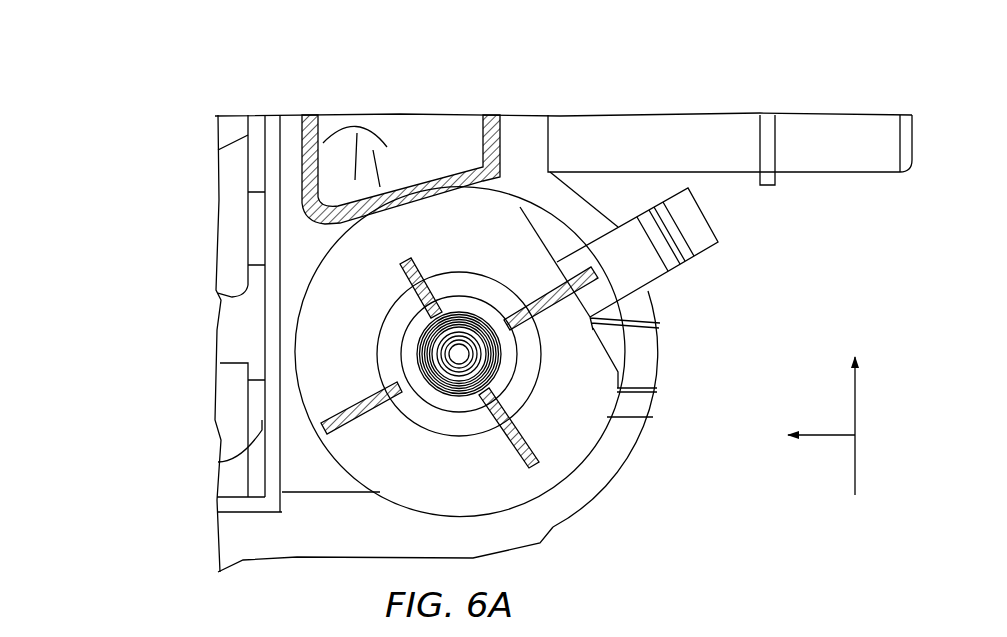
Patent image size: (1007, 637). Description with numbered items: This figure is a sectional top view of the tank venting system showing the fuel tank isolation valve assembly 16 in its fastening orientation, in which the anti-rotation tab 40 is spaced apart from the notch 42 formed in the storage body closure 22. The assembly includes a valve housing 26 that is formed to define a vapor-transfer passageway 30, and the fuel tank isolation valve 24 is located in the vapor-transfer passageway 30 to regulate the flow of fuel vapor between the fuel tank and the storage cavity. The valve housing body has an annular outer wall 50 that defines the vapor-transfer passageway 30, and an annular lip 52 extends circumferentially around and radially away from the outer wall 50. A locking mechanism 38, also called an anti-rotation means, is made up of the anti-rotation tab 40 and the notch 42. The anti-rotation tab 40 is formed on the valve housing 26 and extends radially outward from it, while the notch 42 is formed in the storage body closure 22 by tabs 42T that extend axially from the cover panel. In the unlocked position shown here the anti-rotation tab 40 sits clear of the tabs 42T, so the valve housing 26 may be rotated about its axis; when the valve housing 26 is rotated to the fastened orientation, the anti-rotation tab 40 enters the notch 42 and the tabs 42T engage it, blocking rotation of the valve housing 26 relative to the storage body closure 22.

The fuel tank isolation valve assembly 16 is at (282, 636).
The storage body closure 22 is at (297, 542).
The fuel tank isolation valve 24 is at (485, 296).
The valve housing 26 is at (305, 278).
The vapor-transfer passageway 30 is at (425, 348).
The locking mechanism 38 is at (852, 612).
The anti-rotation tab 40 is at (912, 260).
The notch 42 is at (778, 388).
The tabs 42T is at (617, 312).
The annular outer wall 50 is at (485, 450).
The annular lip 52 is at (565, 462).